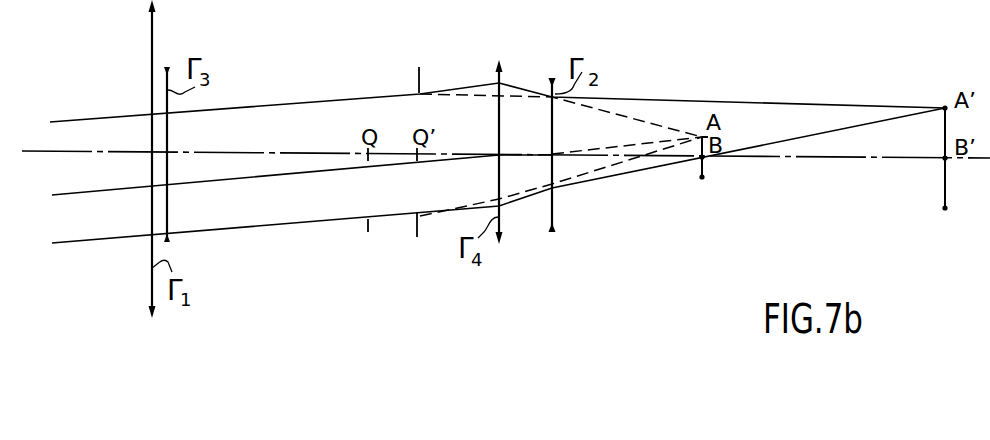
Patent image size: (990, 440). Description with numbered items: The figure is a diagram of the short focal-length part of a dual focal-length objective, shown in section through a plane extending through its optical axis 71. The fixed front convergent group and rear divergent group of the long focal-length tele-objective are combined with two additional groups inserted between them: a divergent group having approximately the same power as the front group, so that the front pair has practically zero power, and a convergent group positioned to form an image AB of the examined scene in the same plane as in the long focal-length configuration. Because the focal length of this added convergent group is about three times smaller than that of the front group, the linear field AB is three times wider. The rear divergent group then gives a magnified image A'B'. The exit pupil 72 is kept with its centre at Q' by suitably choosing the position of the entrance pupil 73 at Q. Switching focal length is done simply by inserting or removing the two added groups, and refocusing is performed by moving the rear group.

The optical axis 71 is at (280, 153).
The exit pupil 72 is at (422, 93).
The entrance pupil 73 is at (372, 92).